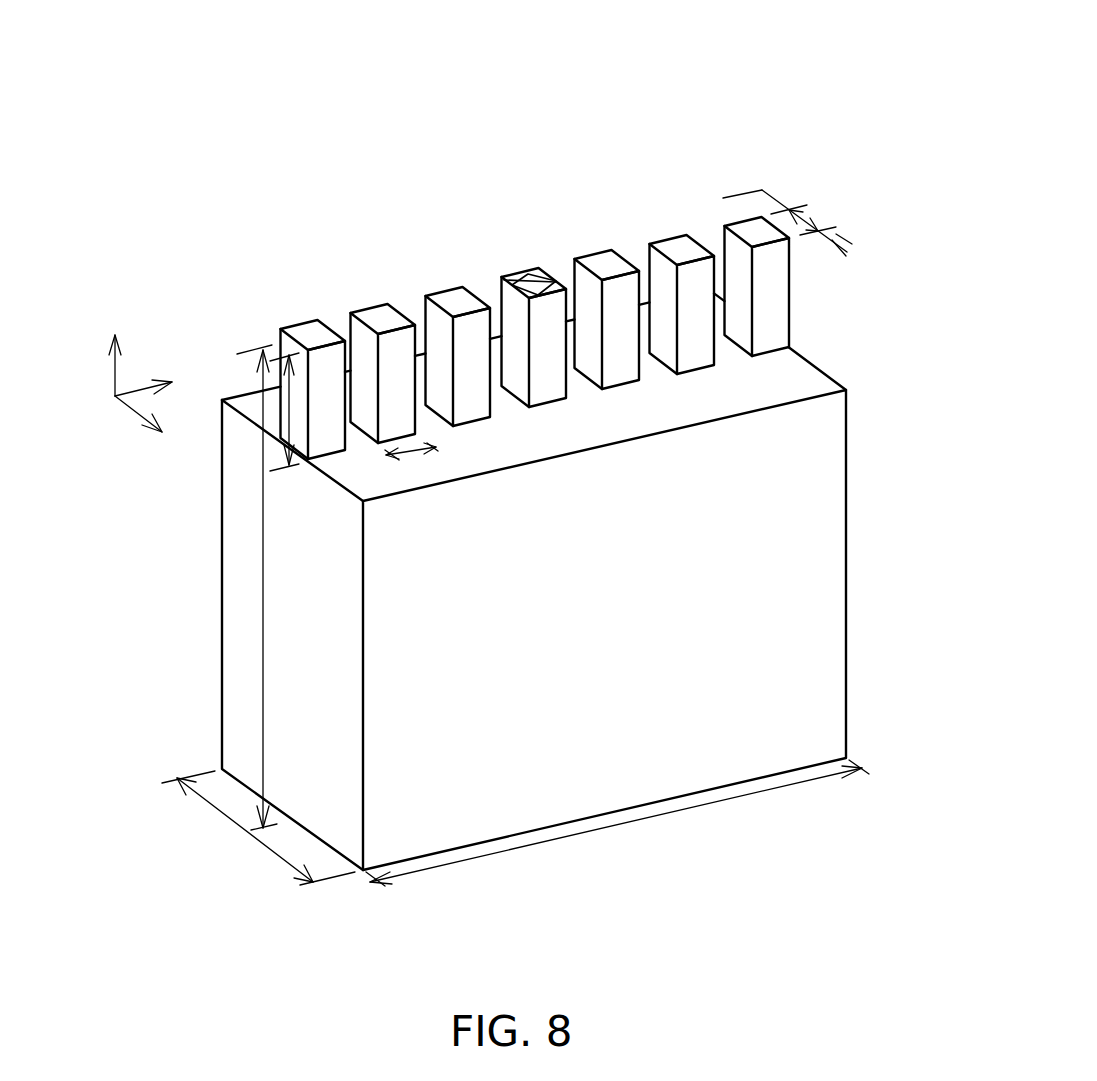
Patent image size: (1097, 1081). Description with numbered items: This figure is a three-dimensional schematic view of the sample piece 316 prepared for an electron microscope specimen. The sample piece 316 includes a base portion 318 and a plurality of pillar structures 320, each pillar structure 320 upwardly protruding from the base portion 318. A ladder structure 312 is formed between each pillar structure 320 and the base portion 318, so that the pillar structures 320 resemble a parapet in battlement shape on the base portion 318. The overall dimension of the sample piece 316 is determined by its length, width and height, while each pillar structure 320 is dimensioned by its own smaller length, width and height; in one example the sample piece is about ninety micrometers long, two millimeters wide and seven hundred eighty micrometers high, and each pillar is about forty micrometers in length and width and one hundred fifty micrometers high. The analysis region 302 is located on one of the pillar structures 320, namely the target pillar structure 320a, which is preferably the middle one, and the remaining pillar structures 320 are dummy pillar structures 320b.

The sample piece 316 is at (790, 120).
The base portion 318 is at (340, 723).
The ladder structure 312 is at (629, 393).
The pillar structure 320 is at (570, 330).
The target pillar structure 320a is at (512, 278).
The dummy pillar structure 320b is at (310, 337).
The analysis region 302 is at (532, 282).